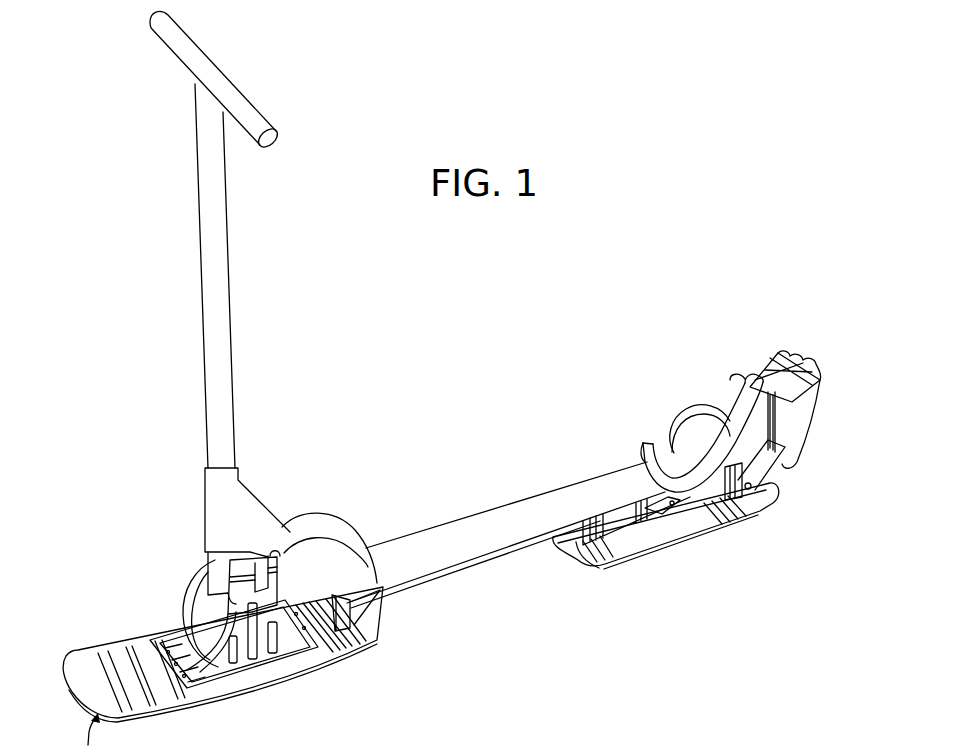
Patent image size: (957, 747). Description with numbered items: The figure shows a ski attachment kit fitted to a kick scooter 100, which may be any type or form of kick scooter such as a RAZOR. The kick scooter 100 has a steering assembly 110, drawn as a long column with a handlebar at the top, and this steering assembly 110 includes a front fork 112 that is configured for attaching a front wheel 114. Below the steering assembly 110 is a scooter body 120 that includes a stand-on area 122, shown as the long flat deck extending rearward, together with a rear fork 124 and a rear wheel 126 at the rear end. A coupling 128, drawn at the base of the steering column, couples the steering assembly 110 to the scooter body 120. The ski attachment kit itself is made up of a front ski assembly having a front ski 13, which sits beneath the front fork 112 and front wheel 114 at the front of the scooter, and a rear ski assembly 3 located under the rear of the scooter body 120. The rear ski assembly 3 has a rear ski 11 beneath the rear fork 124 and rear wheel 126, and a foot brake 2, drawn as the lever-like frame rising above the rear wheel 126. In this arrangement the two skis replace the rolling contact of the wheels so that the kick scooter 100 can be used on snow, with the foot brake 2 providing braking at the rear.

The kick scooter 100 is at (278, 98).
The steering assembly 110 is at (189, 345).
The coupling 128 is at (205, 497).
The front fork 112 is at (208, 557).
The front wheel 114 is at (182, 603).
The front ski 13 is at (203, 702).
The scooter body 120 is at (550, 428).
The stand-on area 122 is at (531, 509).
The rear ski assembly 3 is at (543, 550).
The rear fork 124 is at (686, 417).
The rear wheel 126 is at (688, 410).
The foot brake 2 is at (818, 385).
The rear ski 11 is at (667, 543).